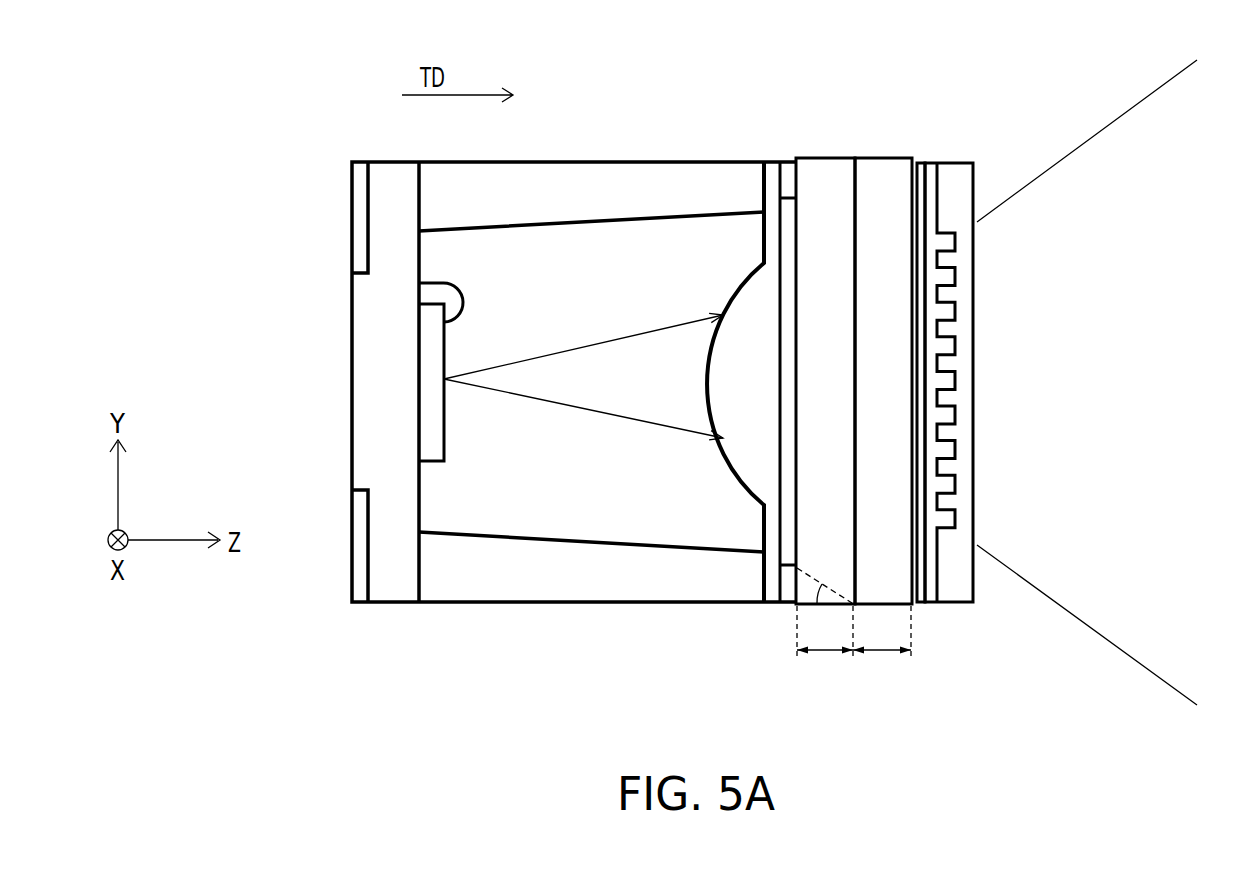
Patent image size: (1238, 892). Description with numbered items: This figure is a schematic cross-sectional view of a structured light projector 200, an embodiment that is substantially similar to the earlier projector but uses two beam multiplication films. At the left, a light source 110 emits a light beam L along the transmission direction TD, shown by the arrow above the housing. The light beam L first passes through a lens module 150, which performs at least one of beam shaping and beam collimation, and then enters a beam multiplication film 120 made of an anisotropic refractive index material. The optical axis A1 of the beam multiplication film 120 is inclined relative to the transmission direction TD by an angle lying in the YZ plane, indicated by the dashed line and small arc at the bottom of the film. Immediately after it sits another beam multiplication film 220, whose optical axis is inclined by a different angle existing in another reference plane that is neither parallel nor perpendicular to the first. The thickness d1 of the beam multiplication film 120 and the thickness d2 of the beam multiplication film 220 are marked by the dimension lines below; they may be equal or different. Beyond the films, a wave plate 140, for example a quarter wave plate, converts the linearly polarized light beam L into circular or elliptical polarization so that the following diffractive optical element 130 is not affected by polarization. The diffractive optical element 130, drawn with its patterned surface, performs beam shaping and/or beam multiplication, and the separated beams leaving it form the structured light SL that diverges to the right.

The structured light projector 200 is at (328, 647).
The light source 110 is at (432, 452).
The lens module 150 is at (773, 170).
The beam multiplication film 120 is at (817, 172).
The beam multiplication film 220 is at (875, 172).
The wave plate 140 is at (920, 172).
The diffractive optical element 130 is at (955, 172).
The light beam L is at (584, 410).
The structured light SL is at (1098, 133).
The optical axis A1 is at (838, 600).
The thickness d1 is at (825, 647).
The thickness d2 is at (882, 647).